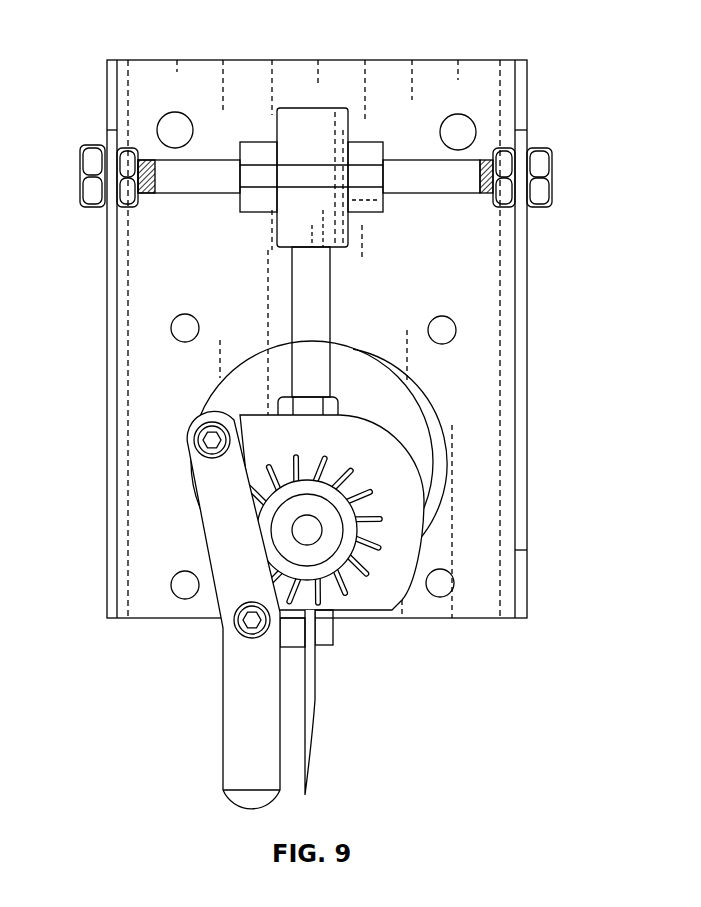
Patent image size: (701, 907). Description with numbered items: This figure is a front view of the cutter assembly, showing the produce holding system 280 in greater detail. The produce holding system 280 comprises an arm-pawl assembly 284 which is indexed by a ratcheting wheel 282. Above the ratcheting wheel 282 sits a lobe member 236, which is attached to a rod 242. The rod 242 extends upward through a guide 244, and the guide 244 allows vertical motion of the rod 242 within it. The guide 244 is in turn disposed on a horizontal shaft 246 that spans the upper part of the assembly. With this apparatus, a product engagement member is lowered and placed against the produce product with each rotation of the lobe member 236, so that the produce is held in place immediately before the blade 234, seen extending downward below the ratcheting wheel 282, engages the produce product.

The blade 234 is at (308, 713).
The lobe member 236 is at (410, 502).
The rod 242 is at (325, 298).
The guide 244 is at (313, 122).
The horizontal shaft 246 is at (432, 158).
The produce holding system 280 is at (208, 609).
The ratcheting wheel 282 is at (387, 522).
The arm-pawl assembly 284 is at (187, 497).